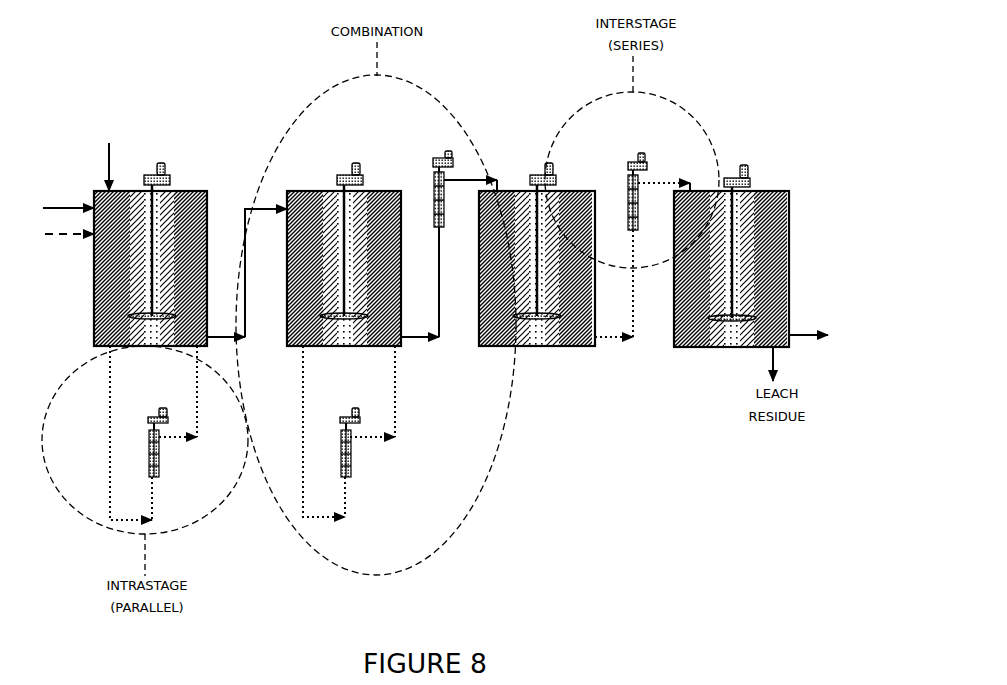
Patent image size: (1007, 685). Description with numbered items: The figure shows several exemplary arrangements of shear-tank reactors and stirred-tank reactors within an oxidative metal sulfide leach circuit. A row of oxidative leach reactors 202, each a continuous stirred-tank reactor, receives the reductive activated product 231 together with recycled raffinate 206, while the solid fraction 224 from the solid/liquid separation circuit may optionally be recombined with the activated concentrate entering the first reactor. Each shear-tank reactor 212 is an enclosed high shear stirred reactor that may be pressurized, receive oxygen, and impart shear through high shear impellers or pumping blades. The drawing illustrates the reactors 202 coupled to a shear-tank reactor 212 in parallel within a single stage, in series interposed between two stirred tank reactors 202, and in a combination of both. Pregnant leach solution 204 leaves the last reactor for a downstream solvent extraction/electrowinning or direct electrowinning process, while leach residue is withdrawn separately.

The oxidative leach reactor 202 is at (93, 268).
The pregnant leach solution 204 is at (800, 333).
The raffinate 206 is at (108, 156).
The shear-tank reactor 212 is at (434, 183).
The solid fraction 224 is at (67, 237).
The reductive activated product 231 is at (72, 206).